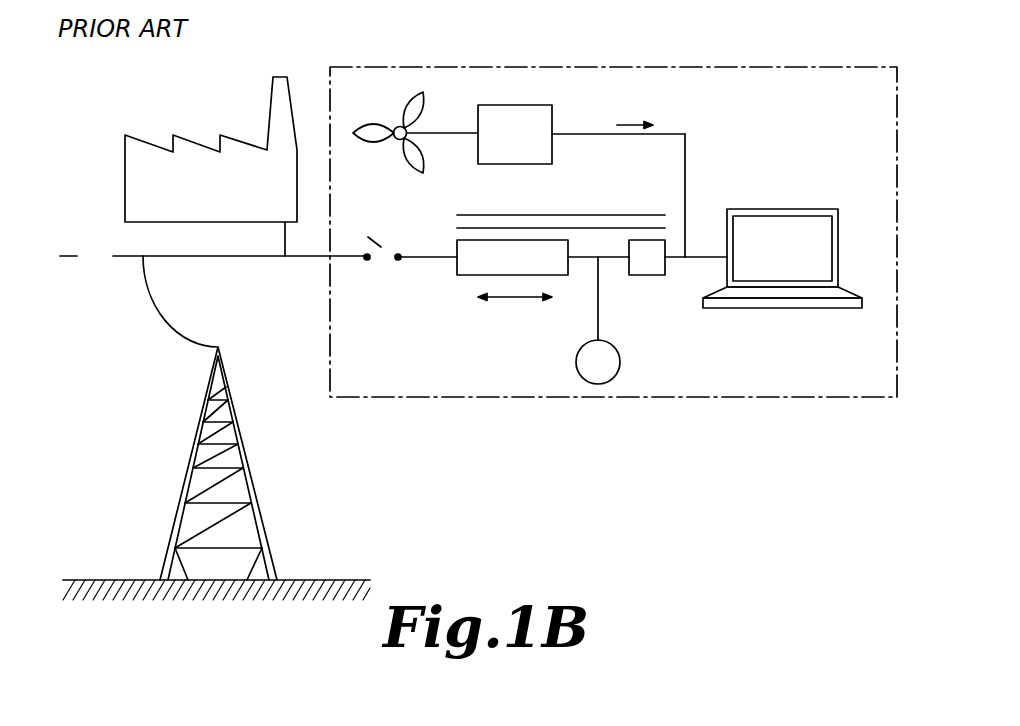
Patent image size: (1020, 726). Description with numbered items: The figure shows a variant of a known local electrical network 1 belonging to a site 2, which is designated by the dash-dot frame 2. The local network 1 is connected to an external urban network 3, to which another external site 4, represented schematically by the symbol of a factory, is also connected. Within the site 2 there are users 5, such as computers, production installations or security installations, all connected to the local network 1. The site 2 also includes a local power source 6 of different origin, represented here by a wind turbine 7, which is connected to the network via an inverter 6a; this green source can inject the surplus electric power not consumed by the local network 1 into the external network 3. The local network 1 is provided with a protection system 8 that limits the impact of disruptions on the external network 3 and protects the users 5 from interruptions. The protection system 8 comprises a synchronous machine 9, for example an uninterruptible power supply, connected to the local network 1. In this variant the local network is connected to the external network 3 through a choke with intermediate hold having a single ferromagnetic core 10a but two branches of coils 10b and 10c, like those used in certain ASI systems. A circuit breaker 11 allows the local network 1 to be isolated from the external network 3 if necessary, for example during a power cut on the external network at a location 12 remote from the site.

The local network 1 is at (685, 153).
The site 2 is at (867, 65).
The external urban network 3 is at (240, 256).
The external site 4 is at (203, 163).
The users 5 is at (785, 295).
The local power source 6 is at (445, 69).
The inverter 6a is at (528, 105).
The wind turbine 7 is at (398, 126).
The protection system 8 is at (443, 323).
The synchronous machine 9 is at (620, 362).
The single ferromagnetic core 10a is at (513, 212).
The coil branch 10b is at (465, 267).
The coil branch 10c is at (653, 275).
The circuit breaker 11 is at (398, 257).
The location 12 is at (98, 256).